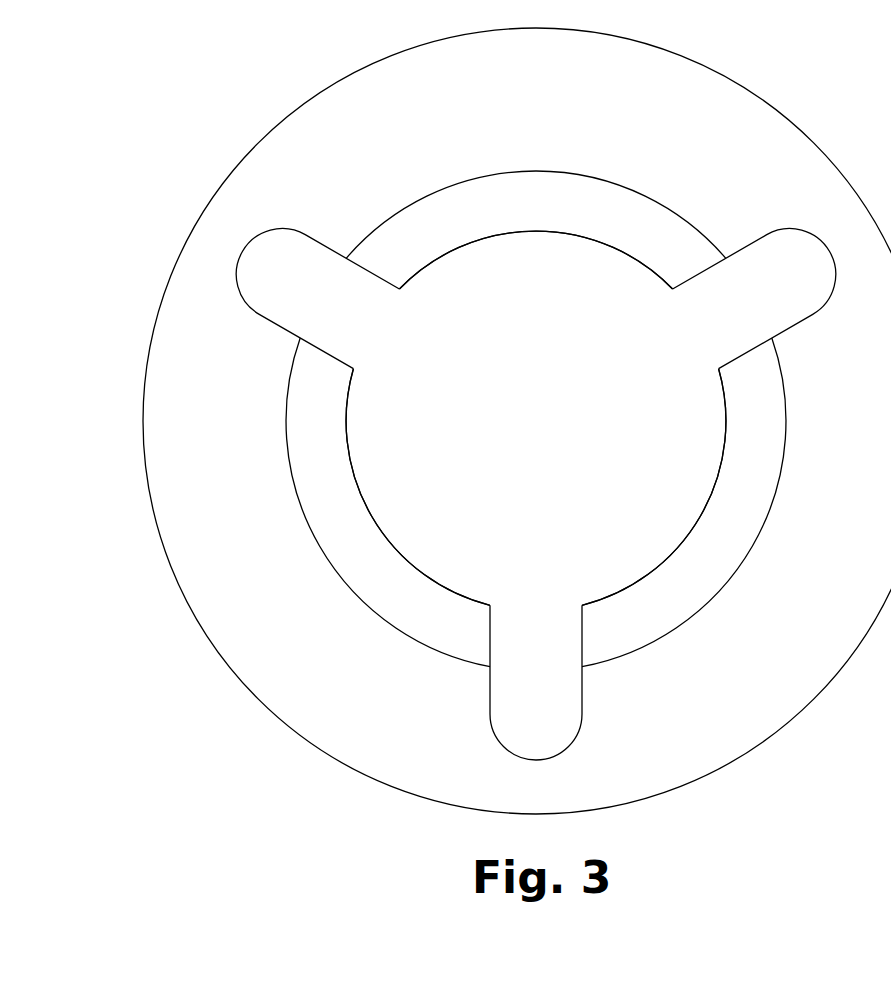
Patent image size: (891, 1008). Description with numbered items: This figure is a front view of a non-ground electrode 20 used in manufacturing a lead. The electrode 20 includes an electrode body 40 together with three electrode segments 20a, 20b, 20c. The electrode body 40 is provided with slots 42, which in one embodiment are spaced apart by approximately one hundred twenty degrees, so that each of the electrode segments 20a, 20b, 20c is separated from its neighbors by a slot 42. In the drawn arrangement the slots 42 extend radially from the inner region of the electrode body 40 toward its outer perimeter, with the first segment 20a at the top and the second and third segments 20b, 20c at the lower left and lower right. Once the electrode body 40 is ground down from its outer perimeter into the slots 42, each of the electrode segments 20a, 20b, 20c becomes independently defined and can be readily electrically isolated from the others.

The non-ground electrode 20 is at (122, 165).
The electrode segment 20a is at (535, 215).
The electrode segment 20b is at (355, 530).
The electrode segment 20c is at (715, 530).
The electrode body 40 is at (392, 90).
The slot 42 is at (547, 729).